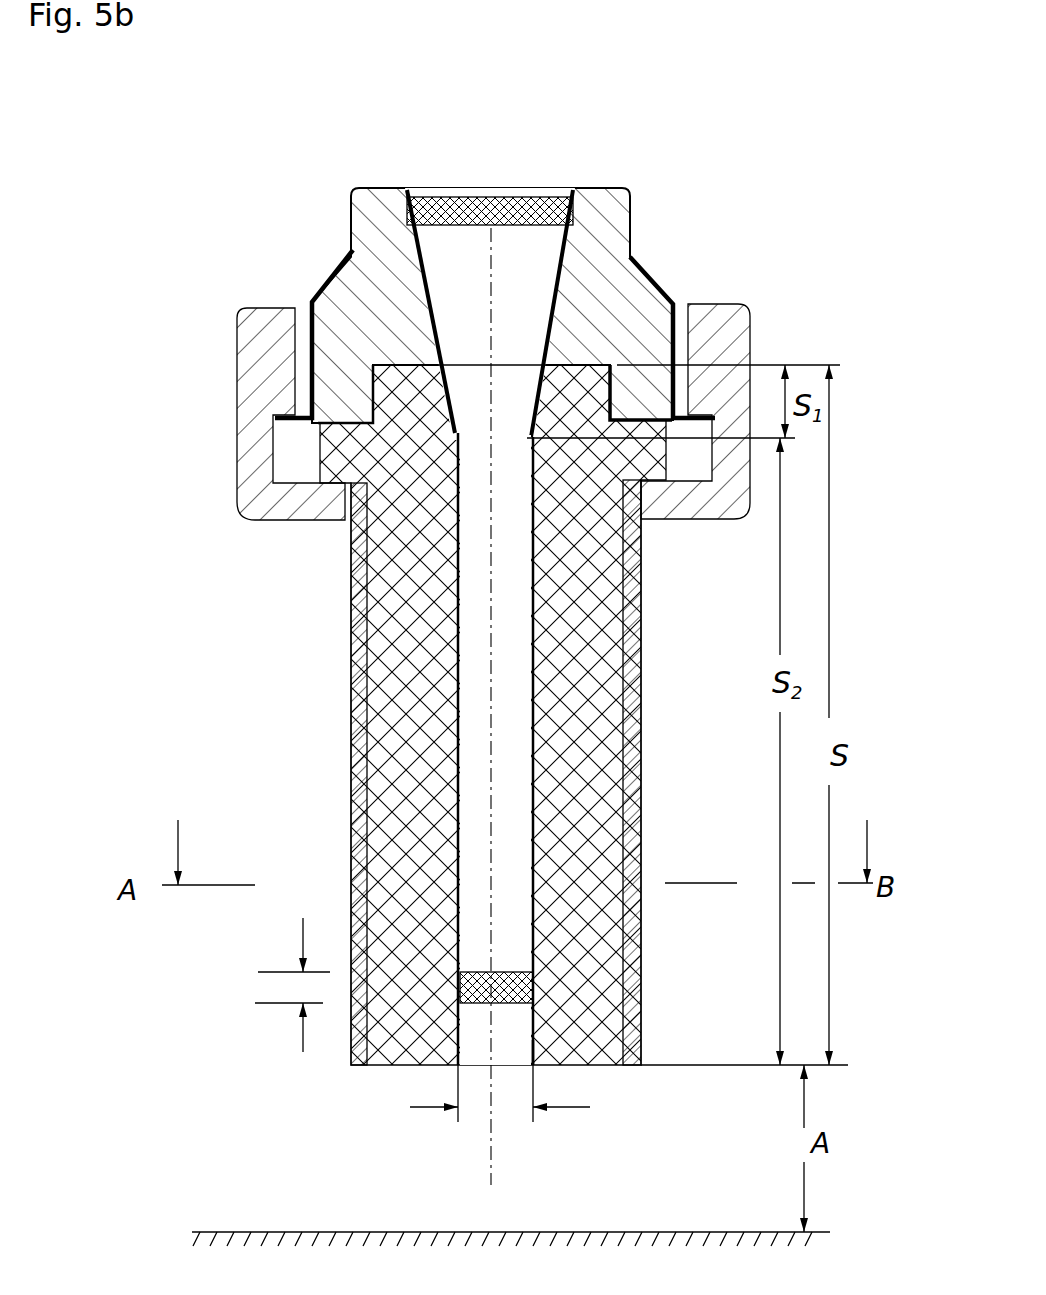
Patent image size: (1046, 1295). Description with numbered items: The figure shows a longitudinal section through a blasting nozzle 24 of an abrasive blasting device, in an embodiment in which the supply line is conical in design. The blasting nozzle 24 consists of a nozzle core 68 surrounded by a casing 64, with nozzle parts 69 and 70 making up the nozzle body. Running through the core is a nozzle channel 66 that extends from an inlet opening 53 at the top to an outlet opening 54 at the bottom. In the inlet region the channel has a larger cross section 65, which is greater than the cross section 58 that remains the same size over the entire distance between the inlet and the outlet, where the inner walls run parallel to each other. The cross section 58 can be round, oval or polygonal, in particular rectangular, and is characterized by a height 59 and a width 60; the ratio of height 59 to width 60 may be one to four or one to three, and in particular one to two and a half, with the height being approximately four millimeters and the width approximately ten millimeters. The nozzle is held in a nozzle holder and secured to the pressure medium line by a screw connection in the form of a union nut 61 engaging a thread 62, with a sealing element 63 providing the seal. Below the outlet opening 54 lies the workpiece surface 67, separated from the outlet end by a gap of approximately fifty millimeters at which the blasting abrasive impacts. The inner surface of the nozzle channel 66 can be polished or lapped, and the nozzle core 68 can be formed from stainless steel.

The blasting nozzle 24 is at (471, 382).
The inlet opening 53 is at (521, 360).
The outlet opening 54 is at (532, 1063).
The cross section 58 is at (470, 1007).
The height 59 is at (230, 1000).
The width 60 is at (493, 1147).
The union nut 61 is at (753, 320).
The thread 62 is at (681, 320).
The sealing element 63 is at (350, 372).
The casing 64 is at (350, 790).
The cross section 65 is at (556, 196).
The nozzle channel 66 is at (535, 685).
The workpiece surface 67 is at (672, 1232).
The nozzle core 68 is at (378, 720).
The nozzle part 69 is at (620, 212).
The nozzle part 70 is at (656, 943).